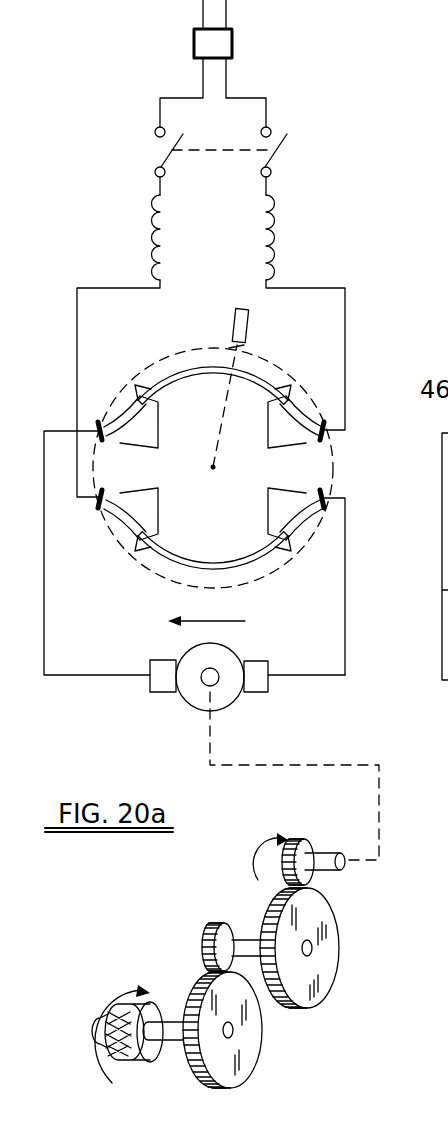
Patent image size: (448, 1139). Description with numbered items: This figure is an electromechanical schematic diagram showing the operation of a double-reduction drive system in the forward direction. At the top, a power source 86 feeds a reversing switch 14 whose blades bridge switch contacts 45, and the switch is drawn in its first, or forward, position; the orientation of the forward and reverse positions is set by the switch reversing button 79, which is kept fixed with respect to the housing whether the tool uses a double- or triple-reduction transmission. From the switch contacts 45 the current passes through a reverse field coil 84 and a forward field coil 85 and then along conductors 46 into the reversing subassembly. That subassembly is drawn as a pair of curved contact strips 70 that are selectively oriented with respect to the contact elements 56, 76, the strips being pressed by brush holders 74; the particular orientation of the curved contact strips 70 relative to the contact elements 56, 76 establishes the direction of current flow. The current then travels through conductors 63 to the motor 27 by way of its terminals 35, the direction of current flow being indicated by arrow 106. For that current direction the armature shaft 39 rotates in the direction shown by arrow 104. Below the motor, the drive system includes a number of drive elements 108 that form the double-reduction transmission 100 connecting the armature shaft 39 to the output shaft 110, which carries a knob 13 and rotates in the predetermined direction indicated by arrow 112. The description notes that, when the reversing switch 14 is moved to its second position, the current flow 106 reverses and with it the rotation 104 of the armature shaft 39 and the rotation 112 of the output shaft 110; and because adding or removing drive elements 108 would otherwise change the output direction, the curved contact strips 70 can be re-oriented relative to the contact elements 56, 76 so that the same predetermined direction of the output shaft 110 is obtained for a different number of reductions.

The power source 86 is at (227, 13).
The switch 14 is at (287, 140).
The switch contacts 45 is at (156, 172).
The reverse field coil 84 is at (150, 232).
The forward field coil 85 is at (276, 216).
The housing / circuit conductor 46 is at (77, 343).
The switch reversing button 79 is at (255, 325).
The curved contact strips 70 is at (191, 392).
The contact element 76 is at (101, 424).
The contact element 56 is at (326, 433).
The brush holders 74 is at (157, 447).
The motor circuit conductor 63 is at (346, 565).
The current direction arrow 106 is at (205, 620).
The motor 27 is at (232, 666).
The motor terminals 35 is at (165, 693).
The armature shaft rotation arrow 104 is at (262, 886).
The armature shaft 39 is at (323, 858).
The drive elements 108 is at (203, 925).
The double-reduction transmission 100 is at (352, 940).
The output shaft 110 is at (178, 1036).
The knurled knob 13 is at (150, 1058).
The output shaft rotation arrow 112 is at (115, 980).